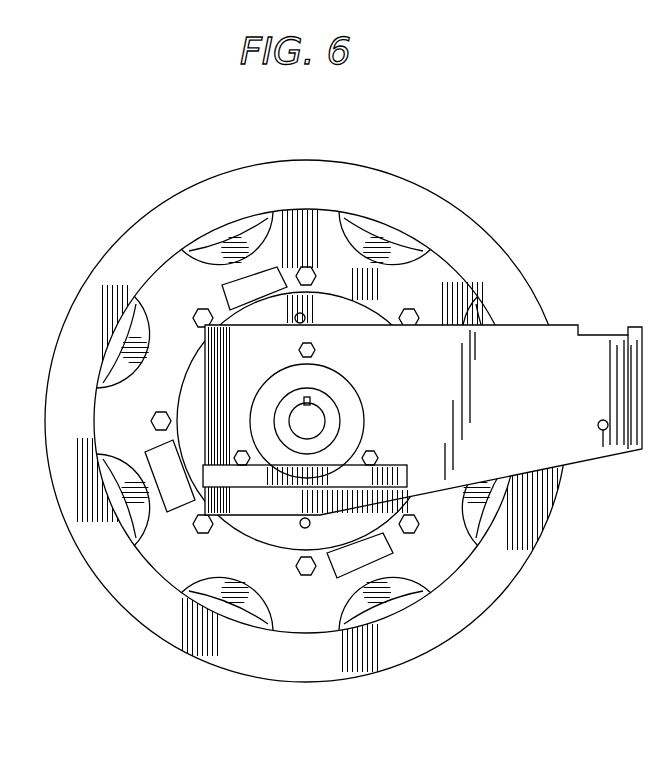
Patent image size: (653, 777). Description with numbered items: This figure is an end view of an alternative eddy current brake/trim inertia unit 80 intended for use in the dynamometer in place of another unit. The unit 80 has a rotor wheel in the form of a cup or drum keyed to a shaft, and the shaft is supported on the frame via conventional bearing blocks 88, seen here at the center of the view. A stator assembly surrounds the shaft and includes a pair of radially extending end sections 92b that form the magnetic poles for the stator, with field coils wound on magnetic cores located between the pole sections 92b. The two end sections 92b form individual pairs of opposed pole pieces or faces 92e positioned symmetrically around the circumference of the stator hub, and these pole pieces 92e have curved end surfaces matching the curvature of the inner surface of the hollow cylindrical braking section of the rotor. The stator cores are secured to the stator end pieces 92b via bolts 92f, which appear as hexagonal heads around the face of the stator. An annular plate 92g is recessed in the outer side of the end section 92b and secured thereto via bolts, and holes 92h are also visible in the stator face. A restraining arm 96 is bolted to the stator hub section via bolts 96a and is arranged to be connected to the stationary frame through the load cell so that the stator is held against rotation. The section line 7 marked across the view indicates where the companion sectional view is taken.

The brake/inertia unit 80 is at (488, 207).
The pole pieces 92e is at (297, 212).
The end sections 92b is at (470, 300).
The annular plate 92g is at (336, 290).
The bolts 92f is at (165, 408).
The holes 92h is at (306, 318).
The restraining arm 96 is at (552, 398).
The bolts 96a is at (315, 350).
The bearing blocks 88 is at (273, 380).
The section line 7- 7 is at (308, 403).